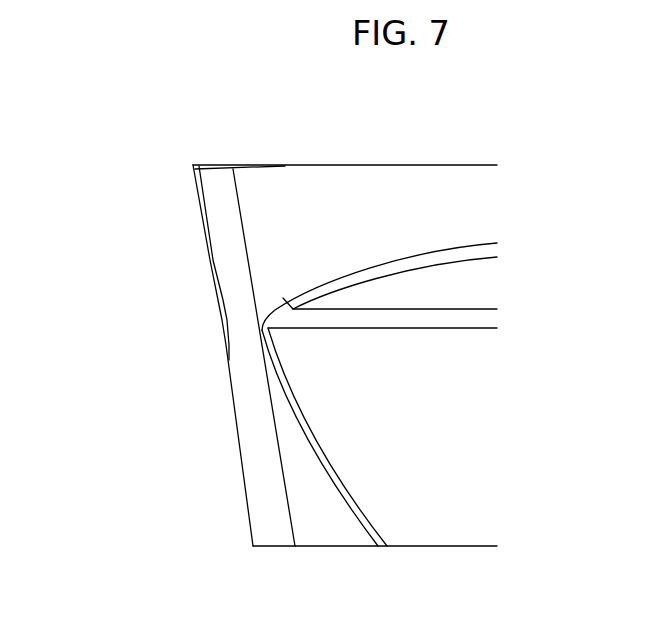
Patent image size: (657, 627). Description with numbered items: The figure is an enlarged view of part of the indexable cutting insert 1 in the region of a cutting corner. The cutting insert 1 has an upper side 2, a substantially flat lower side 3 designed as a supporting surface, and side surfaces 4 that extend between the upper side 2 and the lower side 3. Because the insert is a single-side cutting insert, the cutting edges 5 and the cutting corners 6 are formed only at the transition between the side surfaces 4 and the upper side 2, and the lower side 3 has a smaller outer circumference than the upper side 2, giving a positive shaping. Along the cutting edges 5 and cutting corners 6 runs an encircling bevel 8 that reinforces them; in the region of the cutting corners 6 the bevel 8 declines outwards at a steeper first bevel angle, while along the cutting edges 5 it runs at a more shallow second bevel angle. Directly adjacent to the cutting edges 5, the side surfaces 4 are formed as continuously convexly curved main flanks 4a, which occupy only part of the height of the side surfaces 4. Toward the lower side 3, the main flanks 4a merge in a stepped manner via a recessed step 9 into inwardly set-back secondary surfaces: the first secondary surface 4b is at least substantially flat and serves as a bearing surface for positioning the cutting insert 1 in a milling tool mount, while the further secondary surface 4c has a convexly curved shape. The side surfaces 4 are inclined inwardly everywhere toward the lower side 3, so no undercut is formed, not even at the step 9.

The indexable cutting insert 1 is at (116, 156).
The upper side 2 is at (380, 158).
The lower side 3 is at (403, 550).
The side surfaces 4 is at (226, 403).
The main flanks 4a is at (200, 193).
The first secondary surface 4b is at (420, 468).
The further secondary surface 4c is at (307, 510).
The cutting edges 5 is at (447, 165).
The cutting corners 6 is at (222, 168).
The bevel 8 is at (218, 165).
The step 9 is at (222, 321).